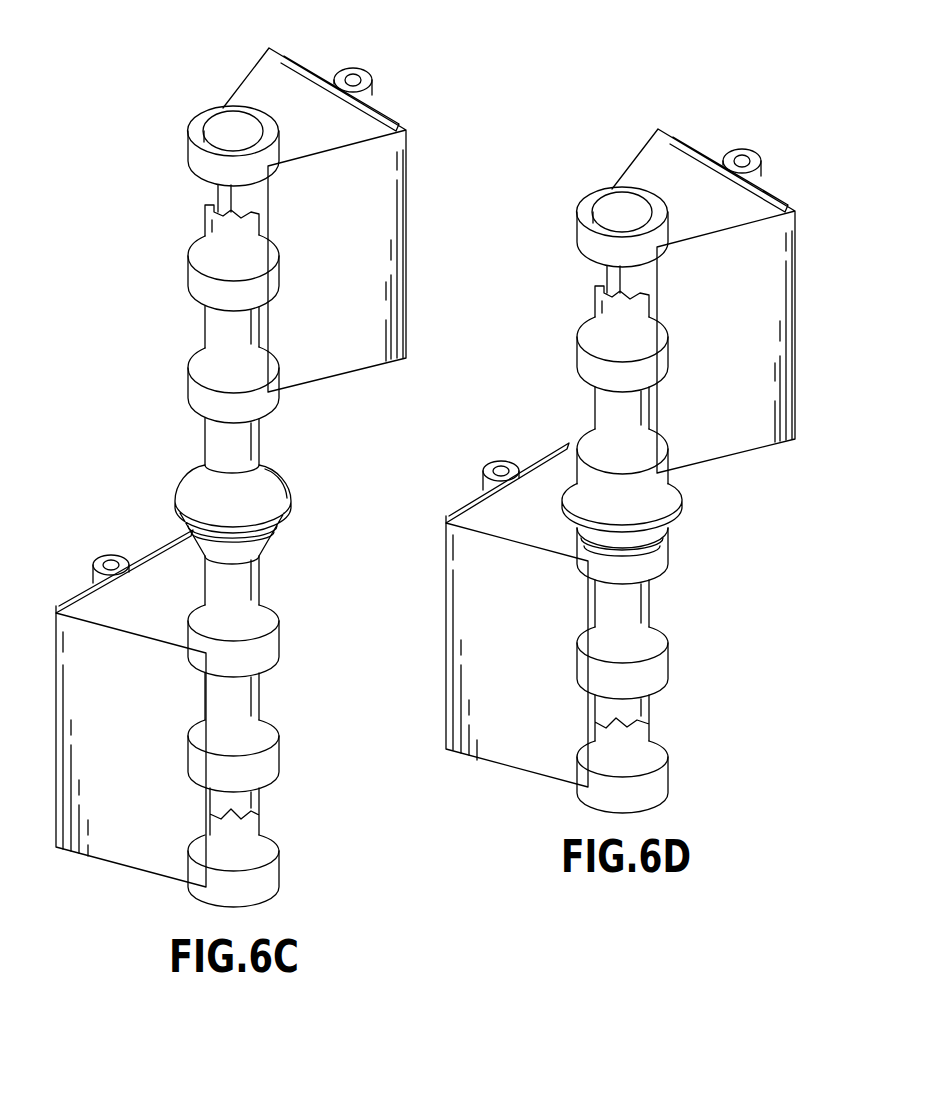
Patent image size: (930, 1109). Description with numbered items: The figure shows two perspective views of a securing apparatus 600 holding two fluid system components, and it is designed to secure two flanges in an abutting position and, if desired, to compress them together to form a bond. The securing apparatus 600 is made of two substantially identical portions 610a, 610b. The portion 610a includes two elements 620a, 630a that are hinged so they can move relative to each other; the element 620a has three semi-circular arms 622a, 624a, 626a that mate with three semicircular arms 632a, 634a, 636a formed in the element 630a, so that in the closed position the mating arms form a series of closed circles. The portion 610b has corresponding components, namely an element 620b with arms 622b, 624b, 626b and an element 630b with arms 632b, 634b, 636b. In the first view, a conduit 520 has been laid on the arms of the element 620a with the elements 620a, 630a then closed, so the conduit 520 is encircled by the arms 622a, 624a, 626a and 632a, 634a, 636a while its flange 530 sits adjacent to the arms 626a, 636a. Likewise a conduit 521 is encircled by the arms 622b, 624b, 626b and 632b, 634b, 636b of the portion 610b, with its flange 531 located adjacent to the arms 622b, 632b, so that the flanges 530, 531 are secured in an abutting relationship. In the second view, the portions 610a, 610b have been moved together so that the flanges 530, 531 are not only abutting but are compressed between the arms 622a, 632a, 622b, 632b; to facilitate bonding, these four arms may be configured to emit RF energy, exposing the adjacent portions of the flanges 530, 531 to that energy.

In FIG. 6C, the securing apparatus 600 is at (68, 190).
In FIG. 6D, the securing apparatus 600 is at (560, 533).
In FIG. 6C, the portion 610a is at (397, 103).
In FIG. 6D, the portion 610a is at (787, 188).
In FIG. 6C, the portion 610b is at (66, 594).
In FIG. 6D, the portion 610b is at (438, 560).
In FIG. 6C, the element 620a is at (285, 81).
In FIG. 6D, the element 620a is at (672, 160).
In FIG. 6C, the element 620b is at (130, 838).
In FIG. 6D, the element 620b is at (520, 745).
In FIG. 6C, the semi-circular arm 622a is at (187, 384).
In FIG. 6D, the semi-circular arm 622a is at (552, 470).
In FIG. 6C, the semi-circular arm 624a is at (187, 270).
In FIG. 6D, the semi-circular arm 624a is at (575, 352).
In FIG. 6C, the semi-circular arm 626a is at (187, 153).
In FIG. 6D, the semi-circular arm 626a is at (575, 233).
In FIG. 6C, the arm 622b is at (205, 655).
In FIG. 6D, the arm 622b is at (603, 570).
In FIG. 6C, the arm 624b is at (211, 770).
In FIG. 6D, the arm 624b is at (600, 678).
In FIG. 6C, the arm 626b is at (210, 893).
In FIG. 6D, the arm 626b is at (600, 795).
In FIG. 6C, the element 630a is at (334, 345).
In FIG. 6D, the element 630a is at (724, 432).
In FIG. 6C, the element 630b is at (178, 548).
In FIG. 6D, the element 630b is at (550, 478).
In FIG. 6C, the semicircular arm 632a is at (258, 402).
In FIG. 6D, the semicircular arm 632a is at (632, 478).
In FIG. 6C, the semicircular arm 634a is at (256, 284).
In FIG. 6D, the semicircular arm 634a is at (643, 365).
In FIG. 6C, the semicircular arm 636a is at (255, 175).
In FIG. 6D, the semicircular arm 636a is at (645, 255).
In FIG. 6C, the arm 632b is at (280, 630).
In FIG. 6D, the arm 632b is at (671, 568).
In FIG. 6C, the arm 634b is at (280, 748).
In FIG. 6D, the arm 634b is at (670, 661).
In FIG. 6C, the arm 636b is at (280, 864).
In FIG. 6D, the arm 636b is at (670, 776).
In FIG. 6C, the conduit 520 is at (205, 442).
In FIG. 6D, the conduit 520 is at (592, 392).
In FIG. 6C, the conduit 521 is at (262, 582).
In FIG. 6D, the conduit 521 is at (652, 606).
In FIG. 6C, the flange 530 is at (290, 478).
In FIG. 6D, the flange 530 is at (688, 490).
In FIG. 6C, the flange 531 is at (271, 540).
In FIG. 6D, the flange 531 is at (635, 544).